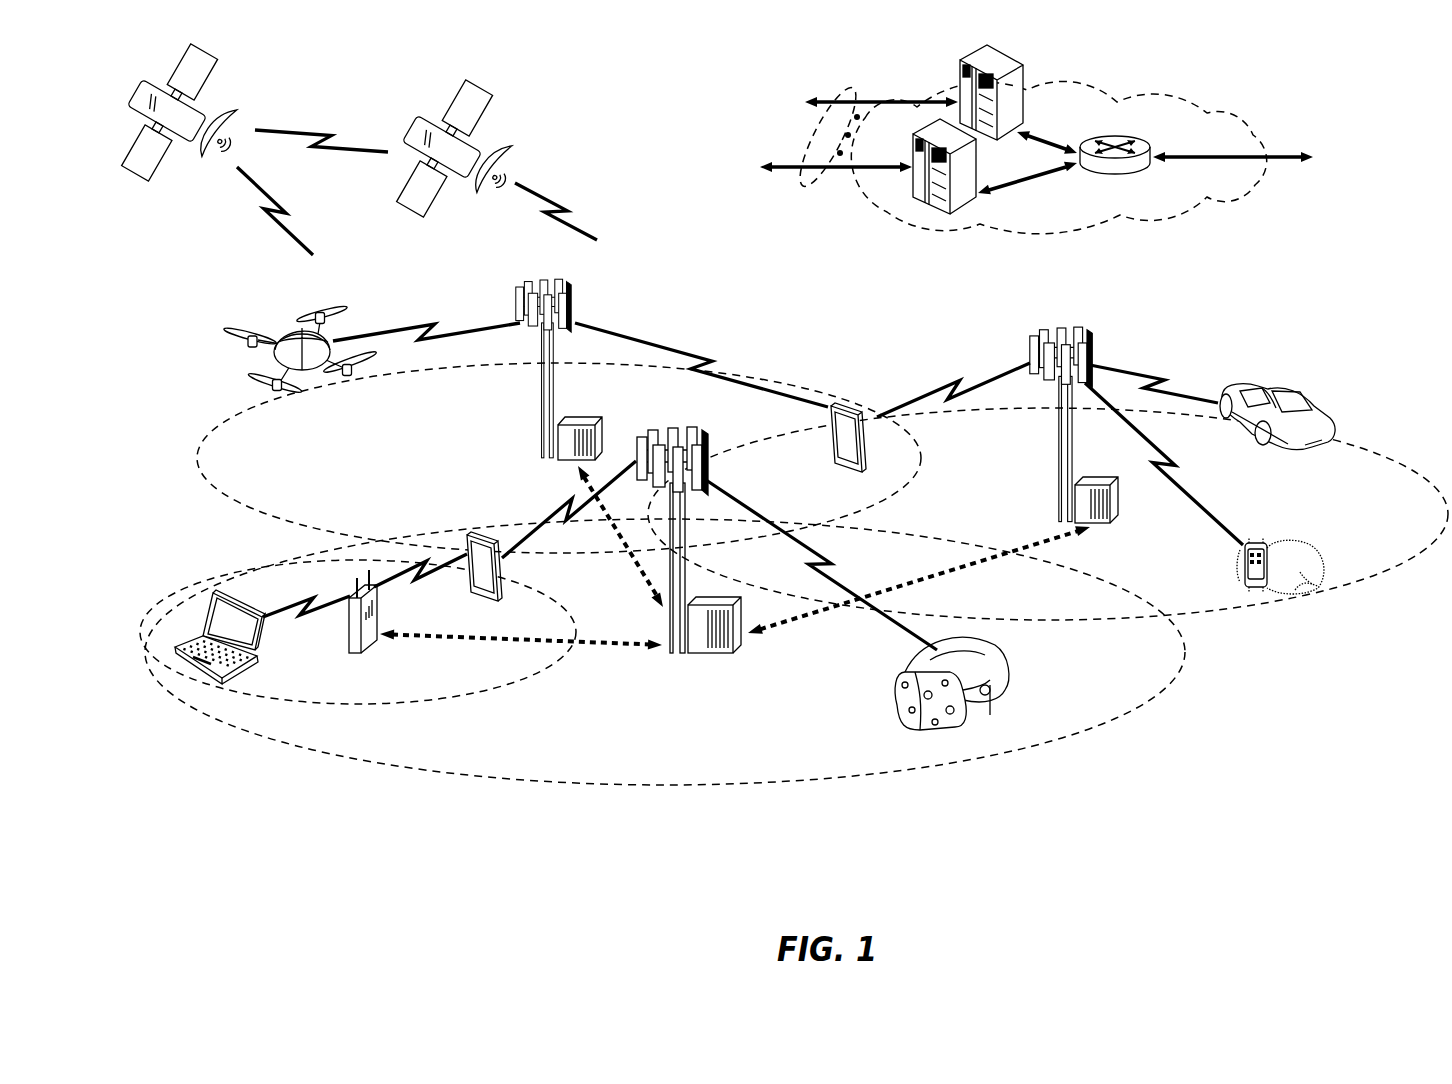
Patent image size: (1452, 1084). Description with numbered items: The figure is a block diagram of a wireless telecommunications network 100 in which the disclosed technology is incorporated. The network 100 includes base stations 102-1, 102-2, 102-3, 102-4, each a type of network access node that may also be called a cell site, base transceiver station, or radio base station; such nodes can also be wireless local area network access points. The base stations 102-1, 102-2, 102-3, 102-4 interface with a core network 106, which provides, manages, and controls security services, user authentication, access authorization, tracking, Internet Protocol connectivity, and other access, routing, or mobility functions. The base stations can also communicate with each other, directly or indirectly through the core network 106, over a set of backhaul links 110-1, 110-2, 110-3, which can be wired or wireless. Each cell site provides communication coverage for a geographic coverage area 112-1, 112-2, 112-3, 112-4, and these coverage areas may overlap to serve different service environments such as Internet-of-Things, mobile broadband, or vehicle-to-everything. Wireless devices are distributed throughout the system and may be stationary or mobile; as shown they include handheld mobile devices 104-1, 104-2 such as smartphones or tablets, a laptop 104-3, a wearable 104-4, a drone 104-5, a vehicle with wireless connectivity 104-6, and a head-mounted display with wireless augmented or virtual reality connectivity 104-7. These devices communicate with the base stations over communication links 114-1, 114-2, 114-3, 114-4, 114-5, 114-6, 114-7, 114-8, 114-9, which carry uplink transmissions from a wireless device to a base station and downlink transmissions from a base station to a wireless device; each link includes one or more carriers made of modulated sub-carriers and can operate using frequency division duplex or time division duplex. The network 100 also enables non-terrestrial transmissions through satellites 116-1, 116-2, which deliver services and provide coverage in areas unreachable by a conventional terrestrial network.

The wireless telecommunications network 100 is at (1410, 83).
The base station 102-1 is at (681, 569).
The base station 102-2 is at (530, 369).
The base station 102-3 is at (1047, 425).
The base station 102-4 is at (337, 628).
The handheld mobile device 104-1 is at (519, 566).
The handheld mobile device 104-2 is at (808, 445).
The laptop 104-3 is at (206, 658).
The wearable 104-4 is at (1280, 545).
The drone 104-5 is at (300, 367).
The vehicle with wireless connectivity 104-6 is at (1289, 398).
The head-mounted display with wireless AR/VR connectivity 104-7 is at (985, 683).
The core network 106 is at (1036, 160).
The backhaul link 110-1 is at (521, 661).
The backhaul link 110-2 is at (919, 579).
The backhaul link 110-3 is at (620, 541).
The geographic coverage area 112-1 is at (665, 679).
The geographic coverage area 112-2 is at (358, 655).
The geographic coverage area 112-3 is at (556, 462).
The geographic coverage area 112-4 is at (1048, 513).
The communication link 114-1 is at (820, 564).
The communication link 114-2 is at (563, 509).
The communication link 114-3 is at (306, 628).
The communication link 114-4 is at (423, 593).
The communication link 114-5 is at (426, 307).
The communication link 114-6 is at (701, 359).
The communication link 114-7 is at (953, 374).
The communication link 114-8 is at (1170, 464).
The communication link 114-9 is at (1154, 363).
The satellite 116-1 is at (244, 143).
The satellite 116-2 is at (486, 156).